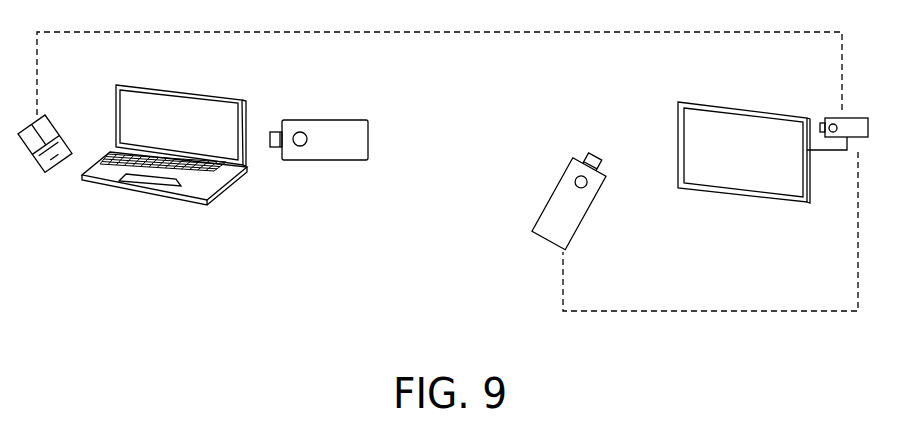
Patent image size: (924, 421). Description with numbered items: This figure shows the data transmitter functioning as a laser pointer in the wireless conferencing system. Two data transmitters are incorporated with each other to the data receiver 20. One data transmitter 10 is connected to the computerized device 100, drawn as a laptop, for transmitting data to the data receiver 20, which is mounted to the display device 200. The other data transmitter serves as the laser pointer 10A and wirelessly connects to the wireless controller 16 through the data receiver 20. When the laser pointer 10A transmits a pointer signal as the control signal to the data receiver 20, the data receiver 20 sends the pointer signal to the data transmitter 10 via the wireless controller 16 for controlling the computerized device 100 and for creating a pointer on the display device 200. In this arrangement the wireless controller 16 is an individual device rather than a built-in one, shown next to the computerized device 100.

The computerized device 100 is at (172, 116).
The wireless controller 16 is at (52, 130).
The data transmitter 10 is at (361, 143).
The display device 200 is at (717, 138).
The data receiver 20 is at (867, 130).
The laser pointer 10A is at (532, 231).